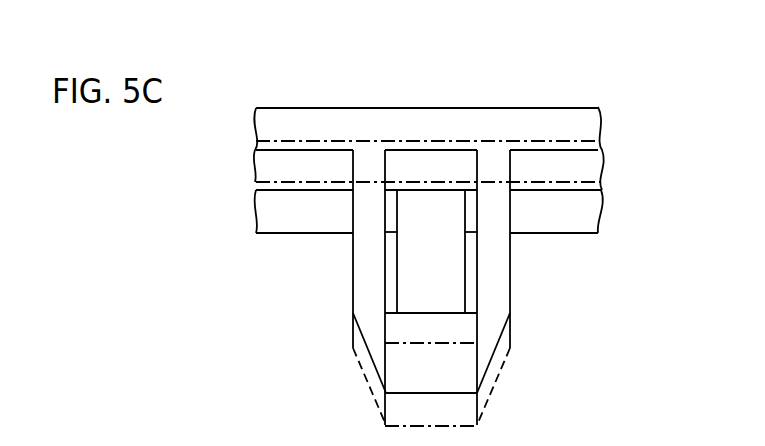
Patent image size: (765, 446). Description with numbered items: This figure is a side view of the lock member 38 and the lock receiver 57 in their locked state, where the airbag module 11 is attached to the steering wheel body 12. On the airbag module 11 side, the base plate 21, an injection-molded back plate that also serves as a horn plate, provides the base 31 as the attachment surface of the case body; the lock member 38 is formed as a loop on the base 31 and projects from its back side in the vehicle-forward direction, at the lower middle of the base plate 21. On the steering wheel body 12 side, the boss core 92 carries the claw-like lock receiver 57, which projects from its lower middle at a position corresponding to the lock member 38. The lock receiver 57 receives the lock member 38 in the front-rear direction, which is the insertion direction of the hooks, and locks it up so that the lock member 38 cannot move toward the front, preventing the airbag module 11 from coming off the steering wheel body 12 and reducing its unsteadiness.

The airbag module 11 is at (603, 96).
The steering wheel body 12 is at (608, 181).
The base plate 21 is at (558, 107).
The base 31 is at (509, 107).
The lock member 38 is at (497, 350).
The lock receiver 57 is at (397, 303).
The boss core 92 is at (582, 220).